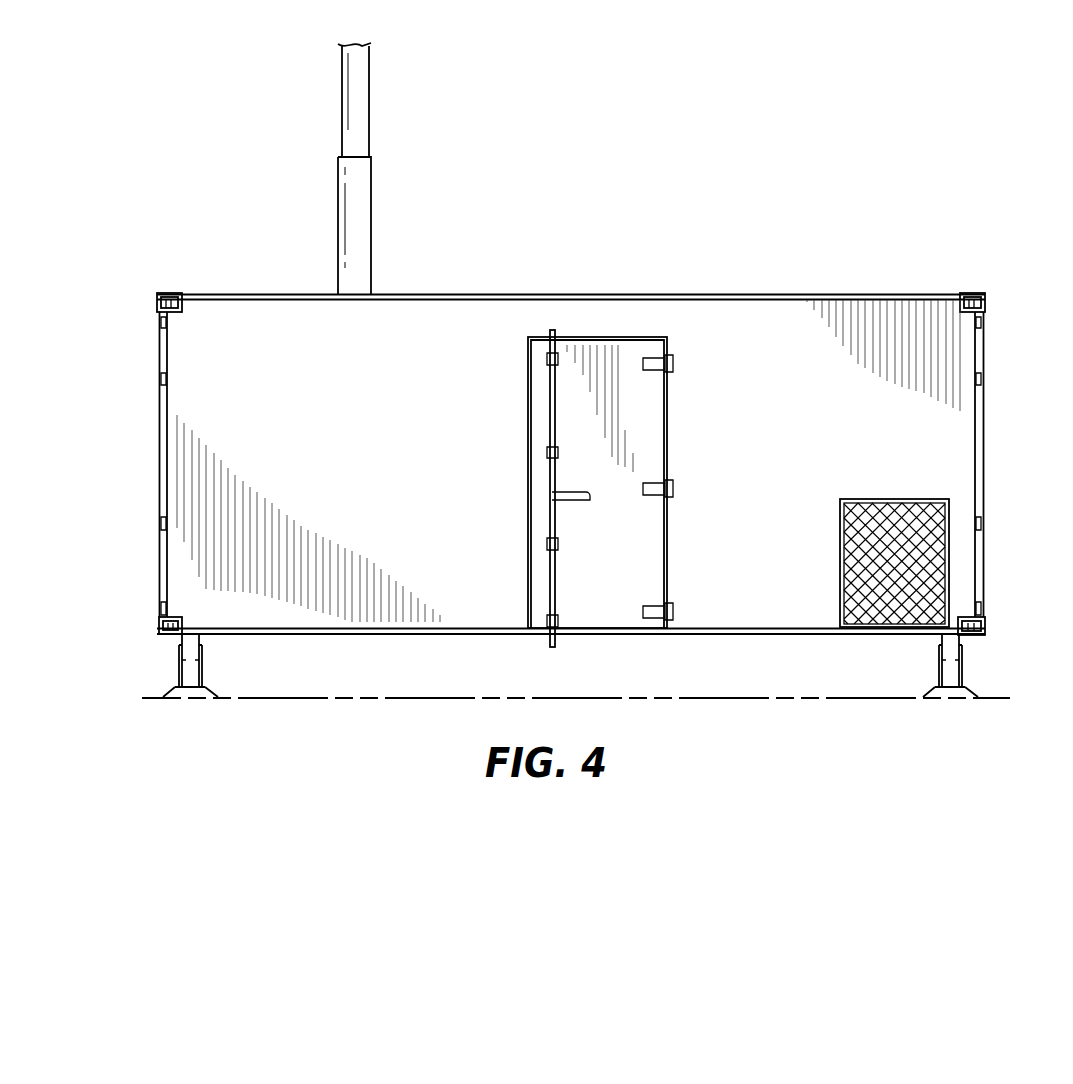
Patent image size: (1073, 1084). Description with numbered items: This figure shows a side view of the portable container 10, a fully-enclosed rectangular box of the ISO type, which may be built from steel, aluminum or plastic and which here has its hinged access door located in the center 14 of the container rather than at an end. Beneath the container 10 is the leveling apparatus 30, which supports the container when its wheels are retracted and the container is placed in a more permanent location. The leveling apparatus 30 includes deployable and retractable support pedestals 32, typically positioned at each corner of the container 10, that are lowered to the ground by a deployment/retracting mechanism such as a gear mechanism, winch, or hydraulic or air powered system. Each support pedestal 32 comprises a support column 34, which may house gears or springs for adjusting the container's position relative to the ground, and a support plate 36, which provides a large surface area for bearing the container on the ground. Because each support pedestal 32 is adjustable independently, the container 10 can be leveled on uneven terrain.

The portable container 10 is at (571, 345).
The center of the container 14 is at (618, 542).
The leveling apparatus 30 is at (566, 642).
The support pedestal 32 is at (171, 665).
The support column 34 is at (193, 673).
The support plate 36 is at (195, 694).